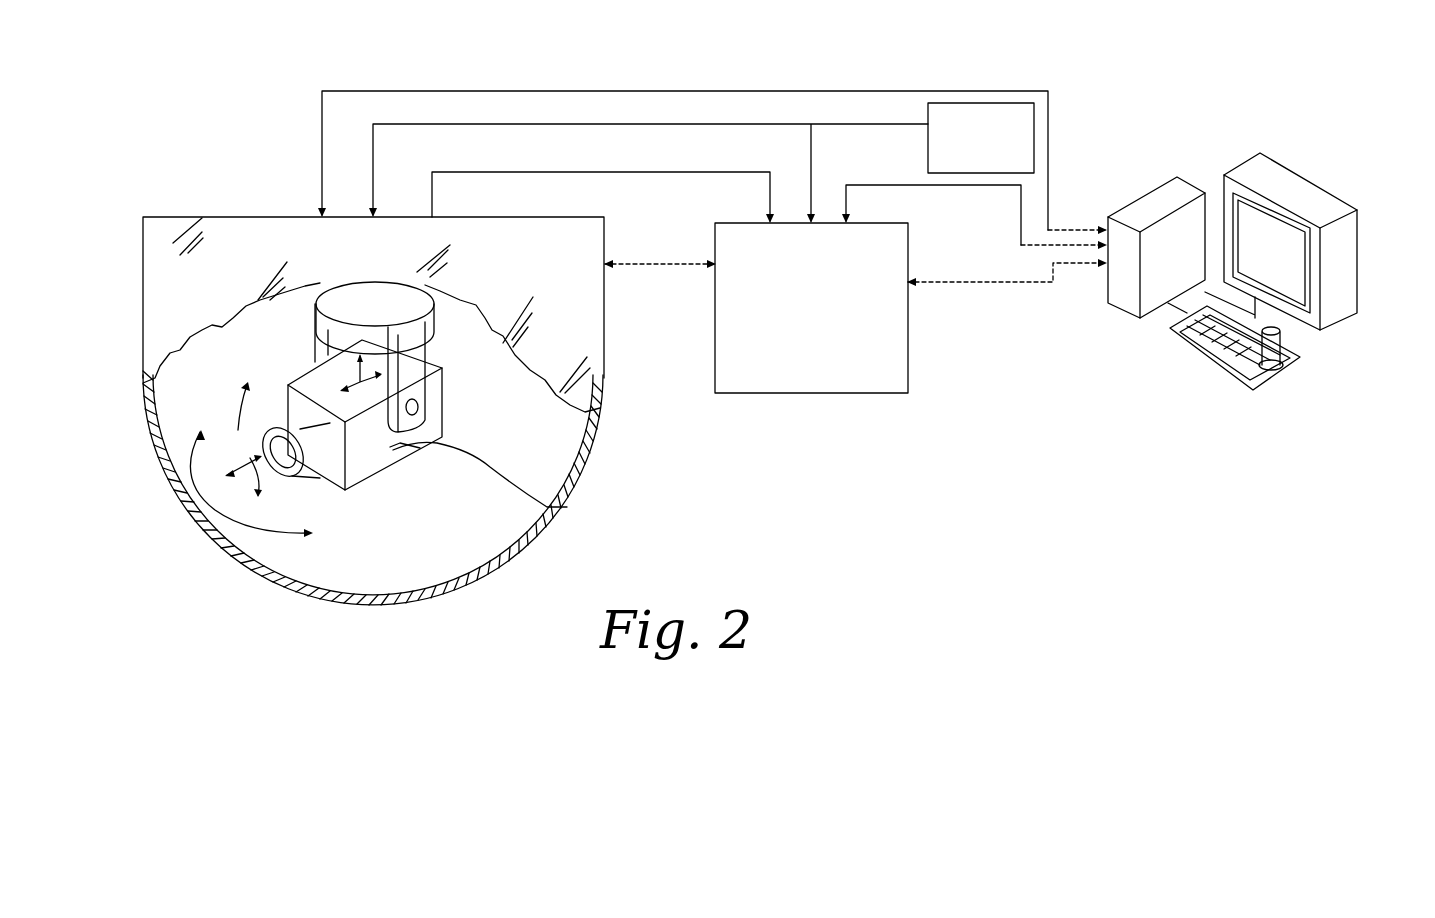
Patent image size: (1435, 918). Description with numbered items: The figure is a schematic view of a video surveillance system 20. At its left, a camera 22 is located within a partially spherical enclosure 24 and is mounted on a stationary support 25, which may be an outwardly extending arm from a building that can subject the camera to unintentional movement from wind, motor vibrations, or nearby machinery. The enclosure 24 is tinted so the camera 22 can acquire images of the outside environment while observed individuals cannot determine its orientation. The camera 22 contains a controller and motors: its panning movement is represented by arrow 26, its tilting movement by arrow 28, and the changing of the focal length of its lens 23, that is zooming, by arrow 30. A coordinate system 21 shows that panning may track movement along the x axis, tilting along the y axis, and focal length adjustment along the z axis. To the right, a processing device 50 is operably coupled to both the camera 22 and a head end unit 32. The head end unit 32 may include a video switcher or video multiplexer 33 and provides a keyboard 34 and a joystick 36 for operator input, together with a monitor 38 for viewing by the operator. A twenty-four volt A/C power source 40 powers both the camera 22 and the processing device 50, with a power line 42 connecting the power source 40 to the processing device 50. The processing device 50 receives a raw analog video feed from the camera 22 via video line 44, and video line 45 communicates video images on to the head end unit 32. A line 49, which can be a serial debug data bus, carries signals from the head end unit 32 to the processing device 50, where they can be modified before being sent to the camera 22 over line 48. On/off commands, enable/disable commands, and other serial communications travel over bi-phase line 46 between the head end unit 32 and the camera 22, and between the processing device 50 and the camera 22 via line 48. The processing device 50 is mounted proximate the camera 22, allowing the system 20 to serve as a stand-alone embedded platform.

The video surveillance system 20 is at (600, 68).
The coordinate system 21 is at (345, 490).
The camera 22 is at (560, 510).
The lens 23 is at (287, 430).
The partially spherical enclosure 24 is at (585, 412).
The support 25 is at (347, 292).
The arrow 26 is at (243, 540).
The arrow 28 is at (240, 425).
The arrow 30 is at (240, 430).
The head end unit 32 is at (1165, 432).
The video switcher or video multiplexer 33 is at (1150, 187).
The keyboard 34 is at (1187, 350).
The joystick 36 is at (1297, 360).
The monitor 38 is at (1313, 265).
The 24 volt A/C power source 40 is at (975, 103).
The power line 42 is at (778, 124).
The video line 44 is at (745, 172).
The video line 45 is at (997, 187).
The bi-phase line 46 is at (725, 91).
The line 48 is at (683, 264).
The line 49 is at (1040, 282).
The processing device 50 is at (908, 385).